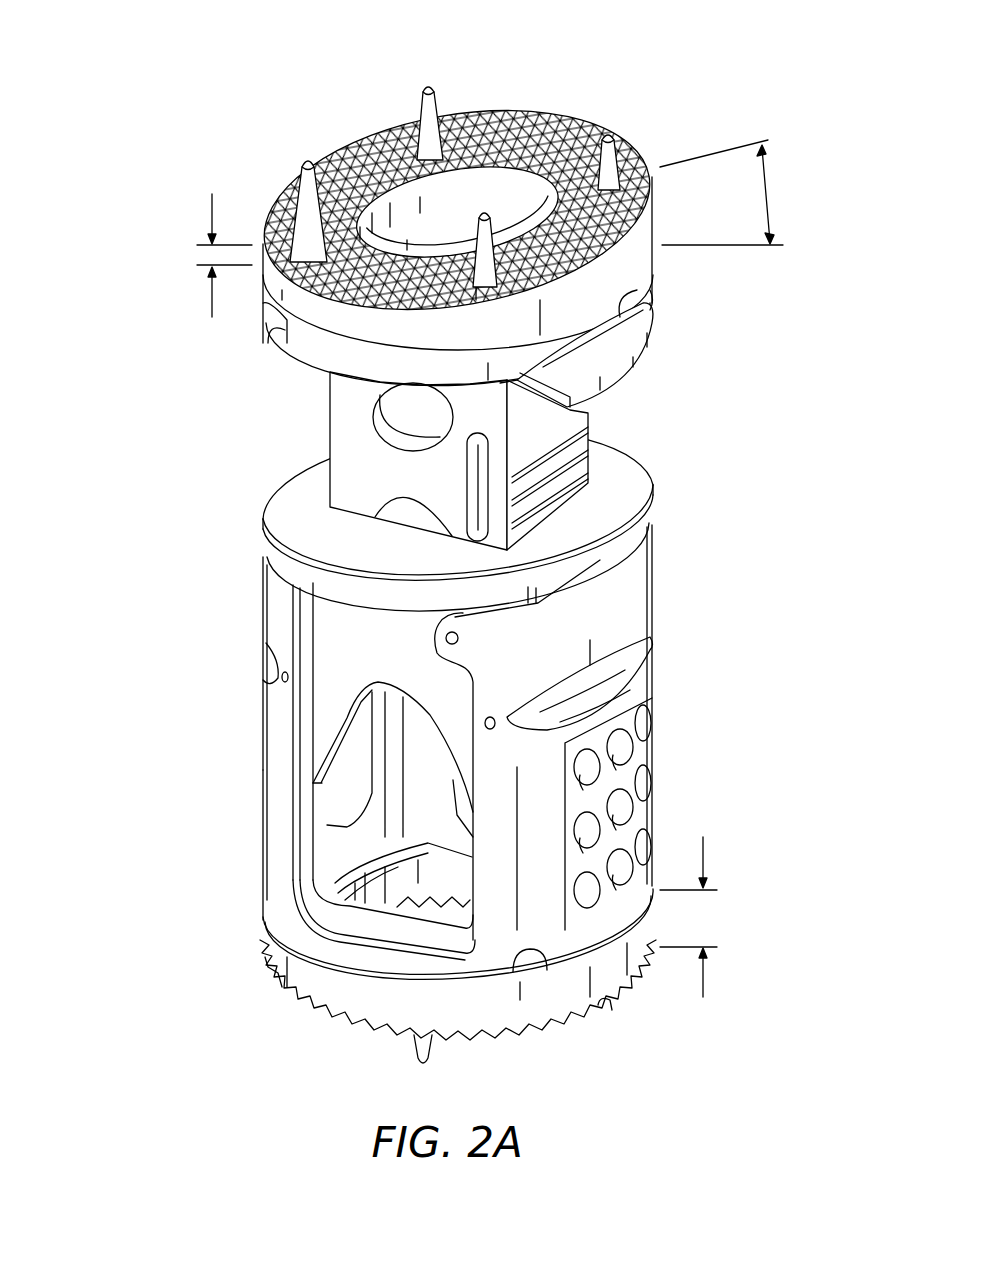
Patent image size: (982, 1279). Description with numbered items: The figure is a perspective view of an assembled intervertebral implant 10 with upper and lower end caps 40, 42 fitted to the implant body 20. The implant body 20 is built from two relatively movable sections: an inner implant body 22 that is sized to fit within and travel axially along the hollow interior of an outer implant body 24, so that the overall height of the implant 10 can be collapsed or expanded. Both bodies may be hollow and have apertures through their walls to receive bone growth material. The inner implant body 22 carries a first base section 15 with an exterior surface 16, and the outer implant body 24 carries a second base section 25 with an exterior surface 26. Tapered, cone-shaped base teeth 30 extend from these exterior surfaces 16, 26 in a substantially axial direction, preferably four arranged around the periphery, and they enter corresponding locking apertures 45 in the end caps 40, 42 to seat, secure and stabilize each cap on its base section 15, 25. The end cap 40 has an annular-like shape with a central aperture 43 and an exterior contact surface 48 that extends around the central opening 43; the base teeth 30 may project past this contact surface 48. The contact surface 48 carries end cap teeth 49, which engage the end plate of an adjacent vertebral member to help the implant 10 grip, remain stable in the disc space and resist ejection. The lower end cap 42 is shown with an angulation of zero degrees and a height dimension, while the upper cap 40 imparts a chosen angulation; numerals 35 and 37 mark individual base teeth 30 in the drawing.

The implant 10 is at (100, 315).
The first base section 15 is at (655, 380).
The exterior surface 16 is at (643, 292).
The implant body 20 is at (198, 448).
The inner implant body 22 is at (297, 385).
The outer implant body 24 is at (262, 755).
The second base section 25 is at (252, 877).
The exterior surface 26 is at (528, 958).
The base teeth 30 is at (298, 152).
The spike 35 is at (293, 193).
The spike 37 is at (428, 84).
The end cap 40 is at (703, 268).
The second end cap 42 is at (222, 937).
The central aperture 43 is at (457, 212).
The locking apertures 45 is at (456, 210).
The exterior contact surface 48 is at (395, 140).
The end cap teeth 49 is at (456, 210).